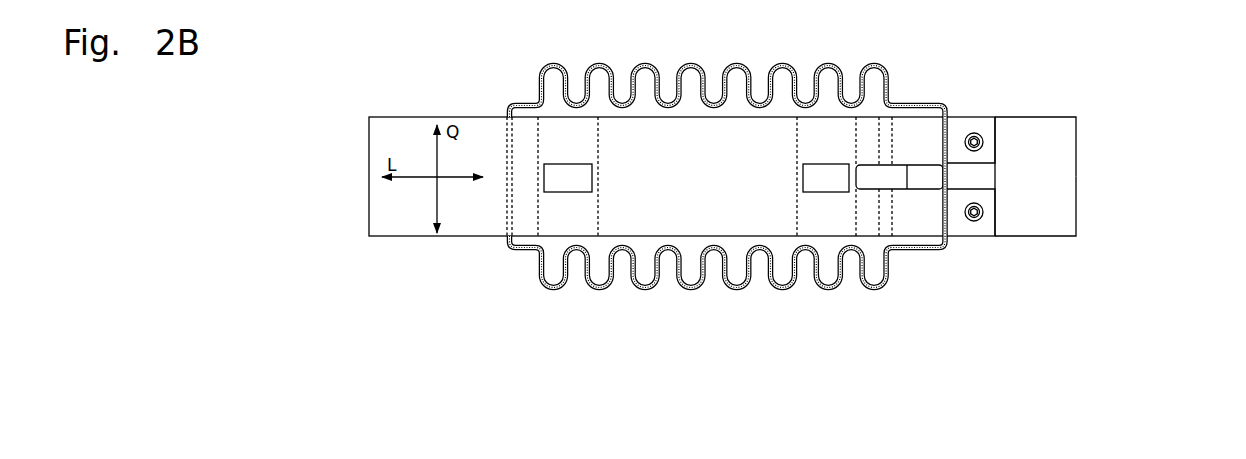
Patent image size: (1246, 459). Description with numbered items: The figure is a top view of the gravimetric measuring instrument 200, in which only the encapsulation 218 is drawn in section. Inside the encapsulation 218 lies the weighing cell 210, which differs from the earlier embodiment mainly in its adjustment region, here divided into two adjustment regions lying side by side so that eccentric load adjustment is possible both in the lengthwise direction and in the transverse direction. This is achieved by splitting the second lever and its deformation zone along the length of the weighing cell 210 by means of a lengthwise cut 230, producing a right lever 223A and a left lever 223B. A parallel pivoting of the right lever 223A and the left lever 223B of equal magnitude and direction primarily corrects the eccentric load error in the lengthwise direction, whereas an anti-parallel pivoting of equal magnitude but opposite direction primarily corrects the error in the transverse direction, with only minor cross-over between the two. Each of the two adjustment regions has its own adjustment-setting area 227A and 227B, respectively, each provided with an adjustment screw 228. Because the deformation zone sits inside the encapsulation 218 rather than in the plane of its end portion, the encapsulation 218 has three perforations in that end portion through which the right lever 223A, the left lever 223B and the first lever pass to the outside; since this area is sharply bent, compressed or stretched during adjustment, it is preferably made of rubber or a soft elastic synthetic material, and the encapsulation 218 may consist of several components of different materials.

The gravimetric measuring instrument 200 is at (385, 83).
The weighing cell 210 is at (728, 215).
The encapsulation 218 is at (599, 291).
The right lever 223A is at (983, 125).
The left lever 223B is at (983, 230).
The adjustment-setting area 227A is at (1020, 133).
The adjustment-setting area 227B is at (1020, 218).
The adjustment screw 228 is at (983, 140).
The lengthwise cut 230 is at (922, 173).